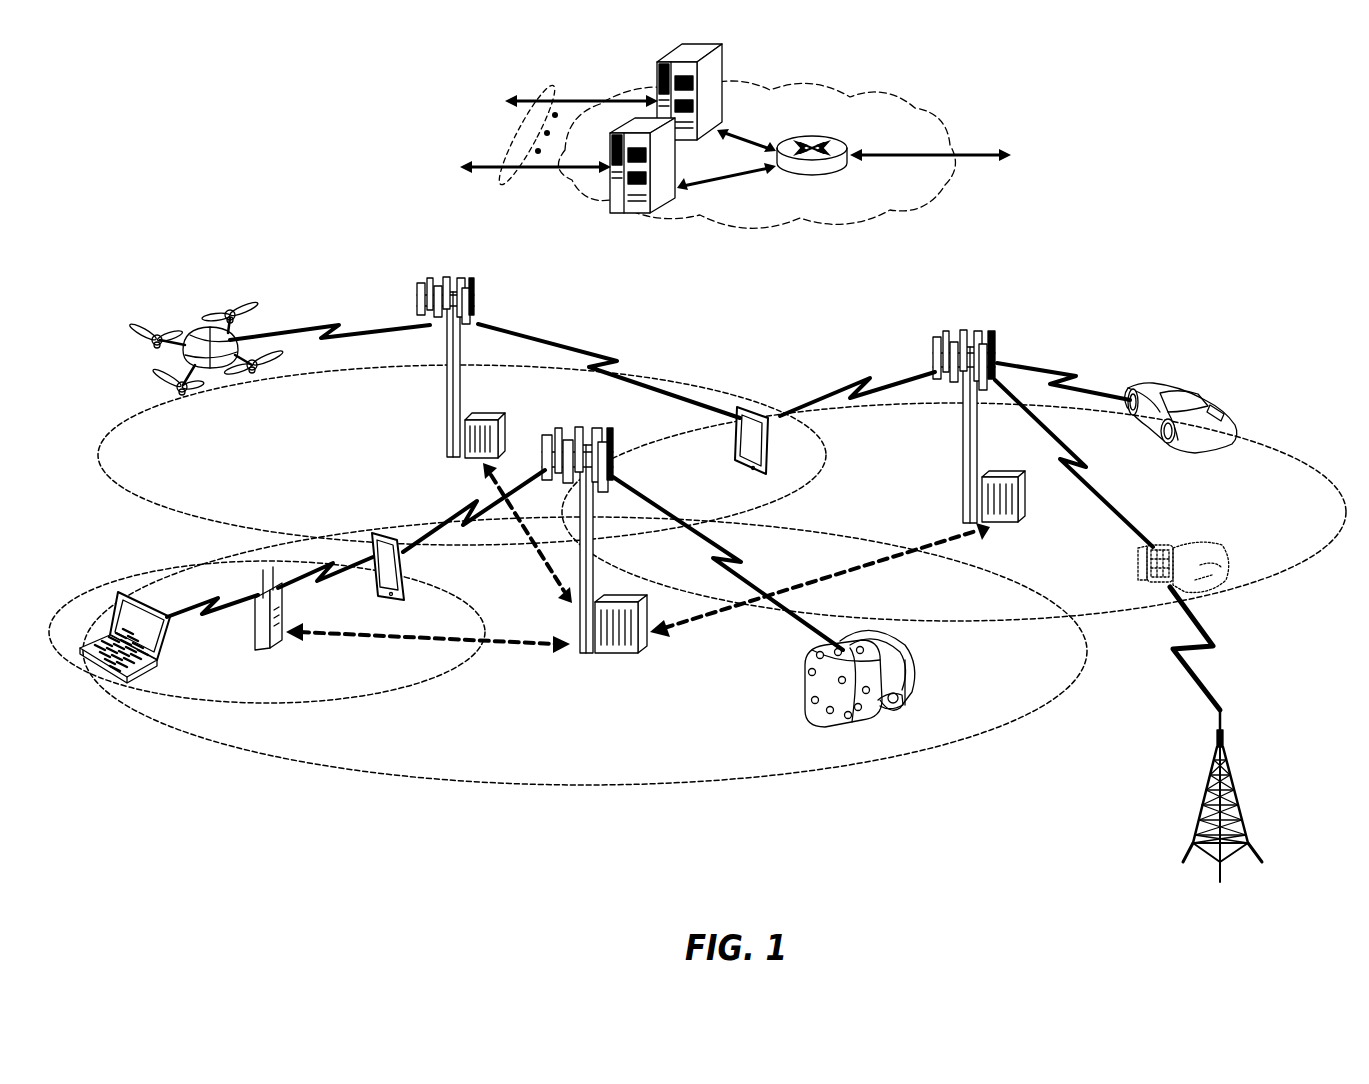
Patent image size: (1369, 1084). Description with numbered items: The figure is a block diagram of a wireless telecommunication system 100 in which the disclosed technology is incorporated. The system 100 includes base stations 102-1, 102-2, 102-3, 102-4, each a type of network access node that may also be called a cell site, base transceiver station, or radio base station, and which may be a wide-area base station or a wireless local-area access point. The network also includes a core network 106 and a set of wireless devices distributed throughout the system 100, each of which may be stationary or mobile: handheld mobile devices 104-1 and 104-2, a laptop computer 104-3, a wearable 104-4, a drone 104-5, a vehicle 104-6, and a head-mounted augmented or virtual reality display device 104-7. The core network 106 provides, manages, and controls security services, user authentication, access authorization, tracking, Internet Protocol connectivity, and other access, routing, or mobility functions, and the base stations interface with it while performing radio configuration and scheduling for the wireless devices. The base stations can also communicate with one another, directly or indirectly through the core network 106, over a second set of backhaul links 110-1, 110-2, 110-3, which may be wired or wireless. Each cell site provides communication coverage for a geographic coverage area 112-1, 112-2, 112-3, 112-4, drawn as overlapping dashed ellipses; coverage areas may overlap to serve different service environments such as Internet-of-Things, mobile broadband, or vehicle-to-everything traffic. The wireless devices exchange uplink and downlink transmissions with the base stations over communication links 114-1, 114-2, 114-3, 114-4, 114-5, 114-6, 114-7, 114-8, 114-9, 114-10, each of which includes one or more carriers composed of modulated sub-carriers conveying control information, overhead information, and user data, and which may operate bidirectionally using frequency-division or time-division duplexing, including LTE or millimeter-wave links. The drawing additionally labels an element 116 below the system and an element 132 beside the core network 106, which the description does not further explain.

The wireless telecommunication system 100 is at (1258, 142).
The base station 102-1 is at (577, 653).
The base station 102-2 is at (447, 407).
The base station 102-3 is at (962, 443).
The base station 102-4 is at (257, 633).
The handheld mobile device 104-1 is at (407, 580).
The handheld mobile device 104-2 is at (733, 440).
The laptop computer 104-3 is at (103, 675).
The wearable 104-4 is at (1167, 543).
The drone 104-5 is at (213, 373).
The vehicle 104-6 is at (1203, 393).
The head-mounted display device 104-7 is at (913, 663).
The core network 106 is at (843, 220).
The backhaul link 110-1 is at (323, 633).
The backhaul link 110-2 is at (885, 560).
The backhaul link 110-3 is at (542, 557).
The geographic coverage area 112-1 is at (505, 783).
The geographic coverage area 112-2 is at (387, 693).
The geographic coverage area 112-3 is at (163, 510).
The geographic coverage area 112-4 is at (1240, 438).
The communication link 114-1 is at (743, 563).
The communication link 114-2 is at (470, 507).
The communication link 114-3 is at (185, 613).
The communication link 114-4 is at (330, 580).
The communication link 114-5 is at (337, 323).
The communication link 114-6 is at (613, 362).
The communication link 114-7 is at (863, 383).
The communication link 114-8 is at (1090, 480).
The communication link 114-9 is at (1060, 367).
The communication link 114-10 is at (1200, 650).
The satellite / broadcast tower 116 is at (1237, 773).
The external network connection 132 is at (517, 182).